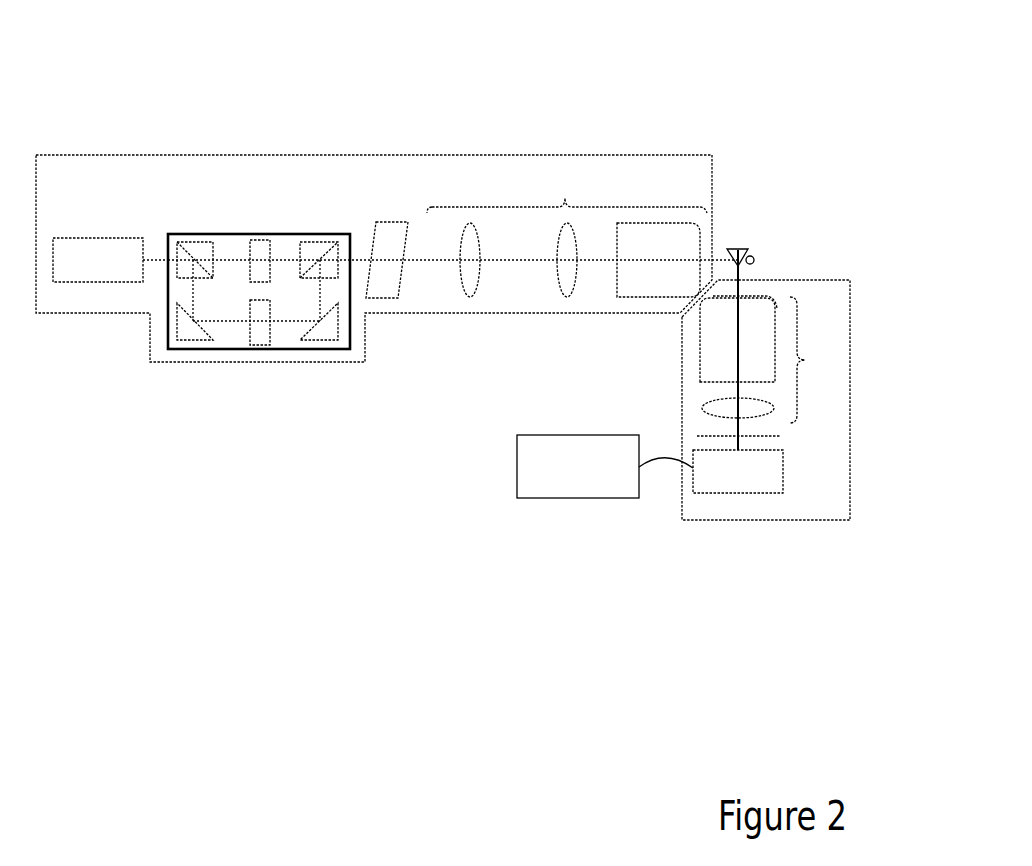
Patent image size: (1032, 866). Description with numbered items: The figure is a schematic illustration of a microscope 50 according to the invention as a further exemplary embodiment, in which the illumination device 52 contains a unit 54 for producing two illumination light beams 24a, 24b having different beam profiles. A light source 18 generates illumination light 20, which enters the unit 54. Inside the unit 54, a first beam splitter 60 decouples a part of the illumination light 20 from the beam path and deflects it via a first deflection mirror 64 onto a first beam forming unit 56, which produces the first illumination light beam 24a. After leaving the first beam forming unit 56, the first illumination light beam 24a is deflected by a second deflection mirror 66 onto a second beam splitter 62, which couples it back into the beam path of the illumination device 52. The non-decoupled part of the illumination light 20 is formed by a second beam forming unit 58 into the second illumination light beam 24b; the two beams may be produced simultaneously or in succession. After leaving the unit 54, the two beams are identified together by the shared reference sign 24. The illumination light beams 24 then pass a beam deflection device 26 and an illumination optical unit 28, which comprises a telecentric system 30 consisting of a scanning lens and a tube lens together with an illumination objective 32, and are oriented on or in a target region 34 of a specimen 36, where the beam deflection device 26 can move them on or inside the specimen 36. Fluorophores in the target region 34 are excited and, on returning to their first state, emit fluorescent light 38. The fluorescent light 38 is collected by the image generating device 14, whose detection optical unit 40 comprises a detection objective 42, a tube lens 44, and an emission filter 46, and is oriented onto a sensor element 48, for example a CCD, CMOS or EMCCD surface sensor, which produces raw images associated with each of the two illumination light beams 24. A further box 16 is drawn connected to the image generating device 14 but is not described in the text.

The image generating device 14 is at (850, 388).
The control unit 16 is at (524, 433).
The light source 18 is at (79, 237).
The illumination light 20 is at (158, 257).
The illumination light beams 24 is at (430, 262).
The first illumination light beam 24a is at (289, 322).
The second illumination light beam 24b is at (287, 257).
The beam deflection device 26 is at (391, 222).
The illumination optical unit 28 is at (567, 189).
The telecentric system 30 is at (518, 256).
The illumination objective 32 is at (626, 300).
The target region 34 is at (753, 253).
The specimen 36 is at (736, 245).
The fluorescent light 38 is at (745, 276).
The detection optical unit 40 is at (777, 359).
The detection objective 42 is at (700, 347).
The tube lens 44 is at (702, 408).
The emission filter 46 is at (780, 436).
The sensor element 48 is at (783, 475).
The microscope 50 is at (755, 80).
The illumination device 52 is at (203, 155).
The unit for producing two illumination light beams 54 is at (297, 232).
The first beam forming unit 56 is at (262, 345).
The second beam forming unit 58 is at (262, 240).
The first beam splitter 60 is at (194, 240).
The second beam splitter 62 is at (322, 242).
The first deflection mirror 64 is at (192, 340).
The second deflection mirror 66 is at (325, 340).